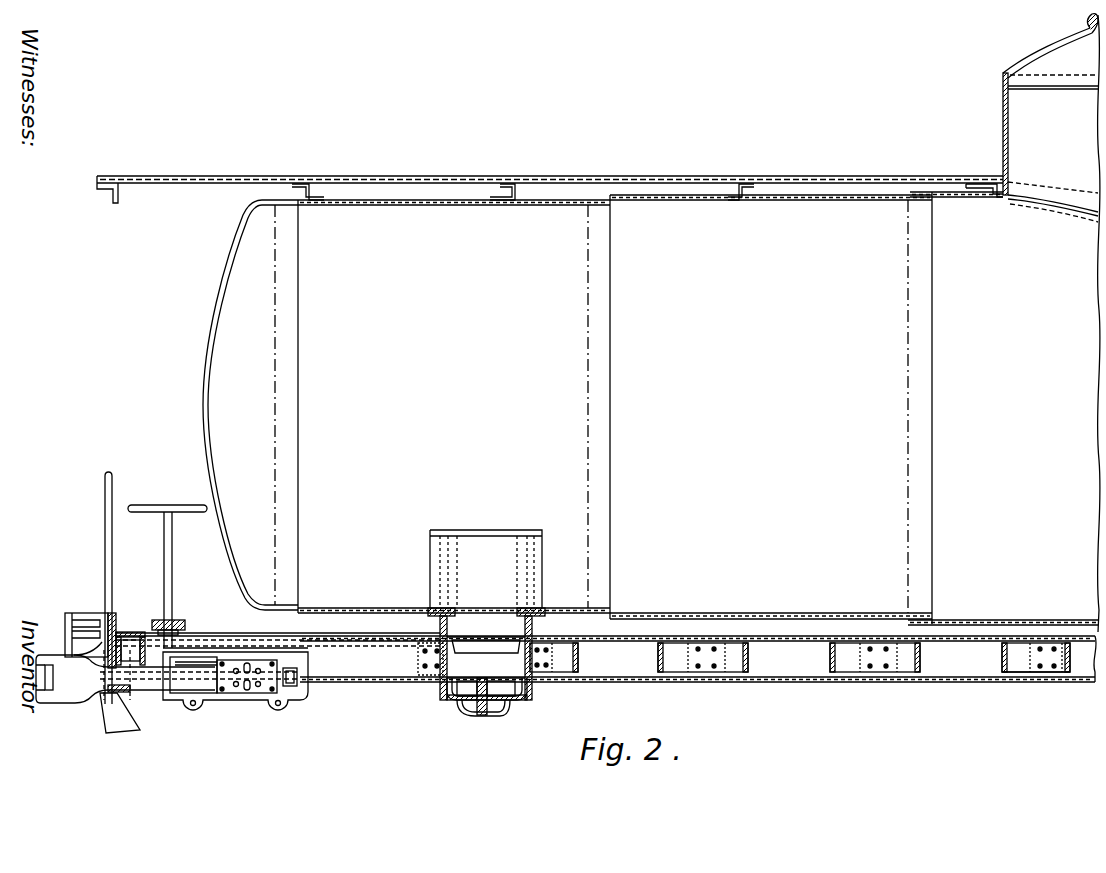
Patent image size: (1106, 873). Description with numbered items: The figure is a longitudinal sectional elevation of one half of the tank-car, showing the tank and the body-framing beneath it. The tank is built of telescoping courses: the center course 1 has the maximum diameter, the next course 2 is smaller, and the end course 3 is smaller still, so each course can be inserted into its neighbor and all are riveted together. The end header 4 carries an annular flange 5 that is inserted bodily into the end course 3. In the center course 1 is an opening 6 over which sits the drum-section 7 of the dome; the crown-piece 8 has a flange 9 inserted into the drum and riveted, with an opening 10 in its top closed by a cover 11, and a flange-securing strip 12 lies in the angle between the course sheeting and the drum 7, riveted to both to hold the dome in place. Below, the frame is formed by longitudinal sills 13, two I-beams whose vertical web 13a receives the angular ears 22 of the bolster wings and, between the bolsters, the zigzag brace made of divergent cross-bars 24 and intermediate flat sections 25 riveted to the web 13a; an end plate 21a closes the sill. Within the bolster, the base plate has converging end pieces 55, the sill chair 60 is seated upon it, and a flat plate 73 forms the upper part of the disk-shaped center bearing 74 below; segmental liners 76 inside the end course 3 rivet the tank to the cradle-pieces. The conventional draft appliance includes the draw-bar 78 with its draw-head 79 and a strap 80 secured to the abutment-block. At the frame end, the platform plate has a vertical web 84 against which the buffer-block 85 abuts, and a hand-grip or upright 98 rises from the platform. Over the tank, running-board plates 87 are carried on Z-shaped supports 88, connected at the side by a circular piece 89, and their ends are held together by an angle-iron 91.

The center course 1 is at (988, 432).
The course 2 is at (771, 408).
The end course 3 is at (454, 407).
The end header 4 is at (250, 406).
The annular flange 5 is at (283, 208).
The opening 6 is at (1050, 213).
The drum-section 7 is at (1019, 143).
The crown-piece 8 is at (1046, 49).
The flange 9 is at (1036, 86).
The opening 10 is at (1085, 44).
The cover 11 is at (1086, 18).
The flange-securing strip 12 is at (1003, 199).
The longitudinal sills 13 is at (617, 670).
The vertical web 13a is at (816, 697).
The sill end plate 21a is at (1062, 697).
The angular ears 22 is at (543, 666).
The divergent cross-bars 24 is at (652, 663).
The intermediate flat sections 25 is at (864, 657).
The converging end pieces 55 is at (486, 658).
The compression or sill chair 60 is at (505, 684).
The flat plate 73 is at (449, 700).
The center bearing 74 is at (463, 708).
The segmental liners 76 is at (432, 582).
The draw-bar 78 is at (165, 702).
The draw-head 79 is at (80, 705).
The strap 80 is at (120, 696).
The vertical web 84 is at (118, 622).
The buffer-block 85 is at (72, 613).
The plates 87 is at (641, 180).
The Z-shaped supports 88 is at (318, 194).
The circular piece 89 is at (130, 733).
The angle-iron 91 is at (108, 196).
The hand-grips or uprights 98 is at (106, 552).